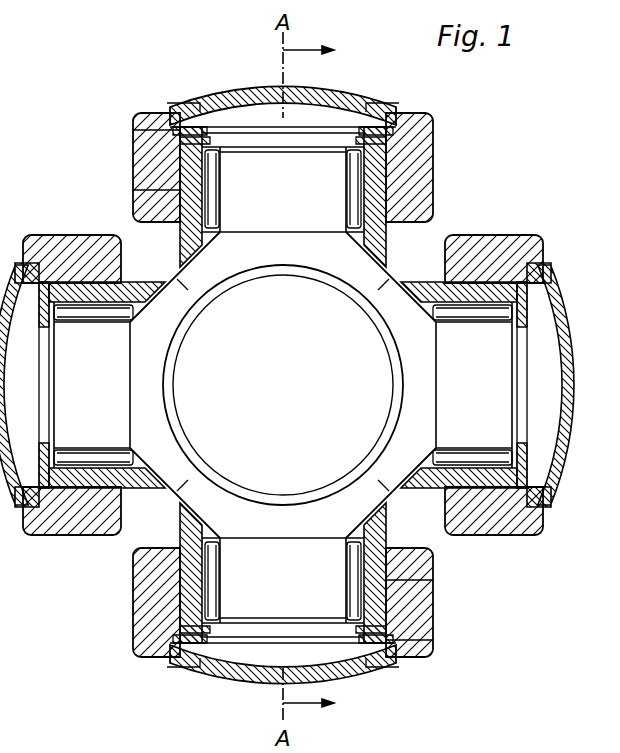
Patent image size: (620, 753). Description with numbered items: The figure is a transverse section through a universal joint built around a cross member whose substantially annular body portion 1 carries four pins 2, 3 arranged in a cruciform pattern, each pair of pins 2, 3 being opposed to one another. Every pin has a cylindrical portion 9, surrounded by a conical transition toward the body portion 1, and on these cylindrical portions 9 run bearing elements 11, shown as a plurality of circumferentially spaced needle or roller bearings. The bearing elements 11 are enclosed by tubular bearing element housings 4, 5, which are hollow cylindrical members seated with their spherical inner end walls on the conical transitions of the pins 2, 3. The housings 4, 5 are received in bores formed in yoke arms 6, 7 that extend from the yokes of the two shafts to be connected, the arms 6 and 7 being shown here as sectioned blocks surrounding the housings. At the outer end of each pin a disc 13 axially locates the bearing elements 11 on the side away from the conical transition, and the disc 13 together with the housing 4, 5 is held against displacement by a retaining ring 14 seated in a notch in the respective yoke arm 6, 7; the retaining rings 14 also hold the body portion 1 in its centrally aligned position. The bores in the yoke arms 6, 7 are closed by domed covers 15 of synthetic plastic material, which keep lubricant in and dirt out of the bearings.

The body portion 1 is at (393, 300).
The pin 2 is at (300, 220).
The pin 3 is at (497, 352).
The bearing element housing 4 is at (384, 206).
The bearing element housing 5 is at (494, 291).
The yoke arm 6 is at (412, 143).
The yoke arm 7 is at (60, 237).
The cylindrical portion 9 is at (222, 177).
The bearing elements 11 is at (172, 185).
The disc 13 is at (221, 103).
The retaining ring 14 is at (172, 130).
The cover 15 is at (345, 99).